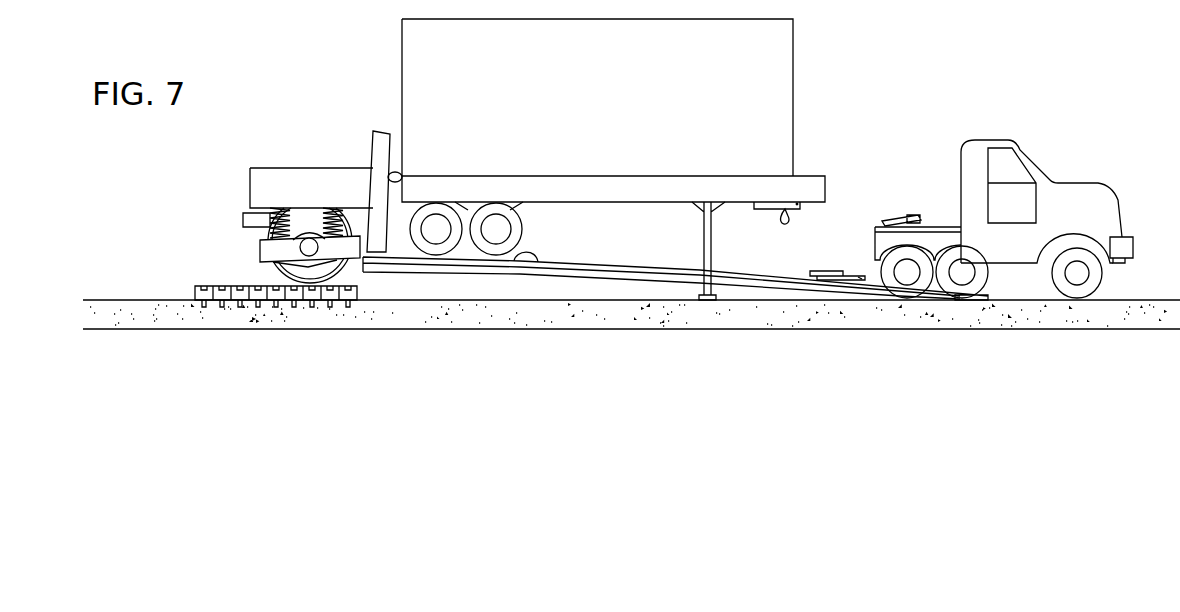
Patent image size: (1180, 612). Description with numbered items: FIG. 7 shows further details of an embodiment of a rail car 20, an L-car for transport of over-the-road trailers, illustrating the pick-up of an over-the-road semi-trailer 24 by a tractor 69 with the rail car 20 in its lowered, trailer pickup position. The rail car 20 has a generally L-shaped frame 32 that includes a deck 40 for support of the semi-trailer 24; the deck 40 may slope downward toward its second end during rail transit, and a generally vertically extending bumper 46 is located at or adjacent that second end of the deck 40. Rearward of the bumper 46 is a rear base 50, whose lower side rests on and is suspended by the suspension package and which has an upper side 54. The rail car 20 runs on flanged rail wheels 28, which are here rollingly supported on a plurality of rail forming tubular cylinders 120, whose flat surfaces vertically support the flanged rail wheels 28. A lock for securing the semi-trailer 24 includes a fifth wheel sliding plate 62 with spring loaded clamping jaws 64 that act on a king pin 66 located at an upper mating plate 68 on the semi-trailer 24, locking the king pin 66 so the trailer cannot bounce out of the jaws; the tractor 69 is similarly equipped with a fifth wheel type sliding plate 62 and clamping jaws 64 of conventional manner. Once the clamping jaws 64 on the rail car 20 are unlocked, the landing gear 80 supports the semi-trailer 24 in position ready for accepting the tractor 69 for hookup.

The rail car 20 is at (420, 263).
The over-the-road semi-trailer 24 is at (795, 56).
The flanged rail wheel 28 is at (268, 273).
The frame 32 is at (567, 277).
The deck 40 is at (518, 254).
The bumper 46 is at (391, 152).
The rear base 50 is at (287, 180).
The upper side 54 is at (325, 168).
The fifth wheel sliding plate 62 is at (830, 271).
The clamping jaws 64 is at (858, 277).
The king pin 66 is at (779, 218).
The upper mating plate 68 is at (790, 221).
The tractor 69 is at (1112, 203).
The landing gear 80 is at (714, 243).
The rail forming tubular cylinders 120 is at (195, 290).